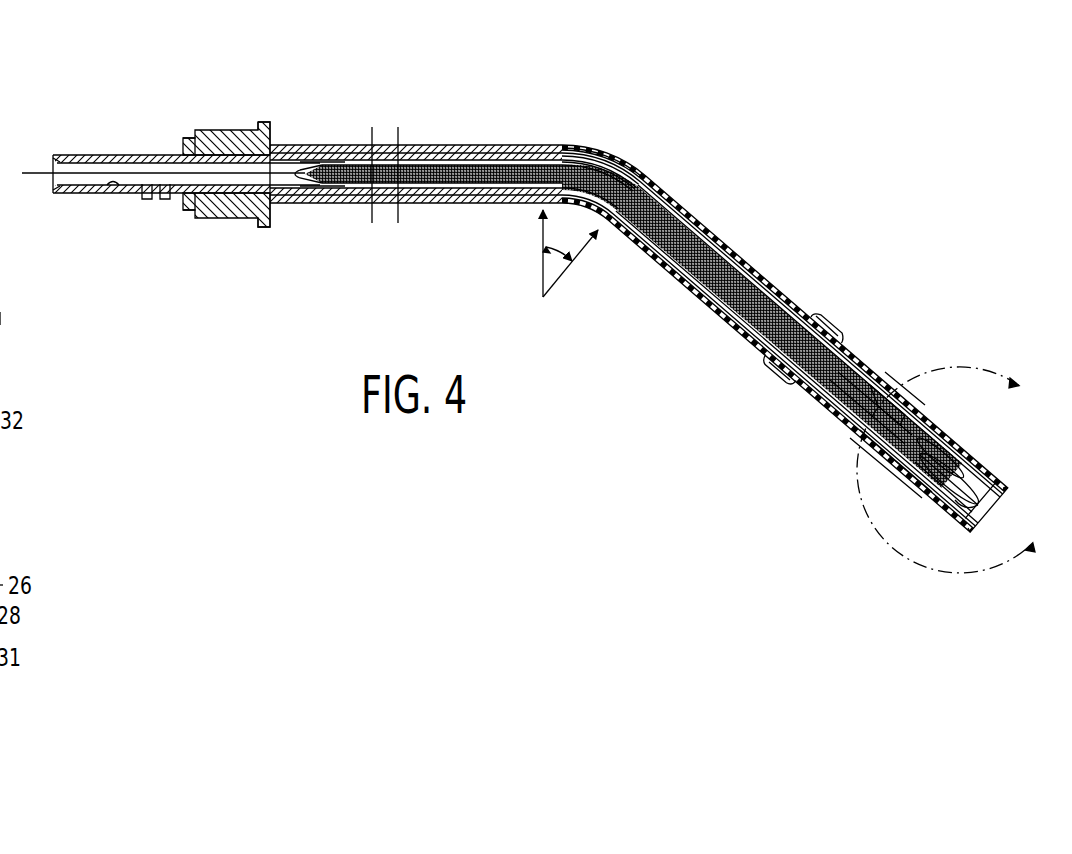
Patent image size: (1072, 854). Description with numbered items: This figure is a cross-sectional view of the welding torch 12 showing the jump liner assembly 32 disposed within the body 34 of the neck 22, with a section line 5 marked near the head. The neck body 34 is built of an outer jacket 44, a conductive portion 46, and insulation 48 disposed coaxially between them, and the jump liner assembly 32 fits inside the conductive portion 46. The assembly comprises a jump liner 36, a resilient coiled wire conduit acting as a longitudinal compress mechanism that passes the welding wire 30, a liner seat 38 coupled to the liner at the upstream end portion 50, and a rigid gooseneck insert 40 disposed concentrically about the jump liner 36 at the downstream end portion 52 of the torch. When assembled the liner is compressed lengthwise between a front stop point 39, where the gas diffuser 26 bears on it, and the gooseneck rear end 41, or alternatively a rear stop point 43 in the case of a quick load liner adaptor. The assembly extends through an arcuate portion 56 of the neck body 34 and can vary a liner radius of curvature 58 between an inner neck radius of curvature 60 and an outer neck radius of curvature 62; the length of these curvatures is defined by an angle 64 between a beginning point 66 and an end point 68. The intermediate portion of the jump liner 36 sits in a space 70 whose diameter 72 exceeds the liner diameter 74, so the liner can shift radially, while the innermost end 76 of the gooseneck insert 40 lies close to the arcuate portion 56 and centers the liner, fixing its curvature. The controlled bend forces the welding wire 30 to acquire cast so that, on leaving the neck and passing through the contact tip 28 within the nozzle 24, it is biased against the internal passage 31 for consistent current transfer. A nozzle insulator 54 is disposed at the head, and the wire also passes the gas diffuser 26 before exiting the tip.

The welding torch 12 is at (727, 101).
The neck 22 is at (712, 170).
The nozzle 24 is at (817, 423).
The gas diffuser 26 is at (881, 380).
The contact tip 28 is at (966, 480).
The welding wire 30 is at (1006, 519).
The internal passage 31 is at (950, 481).
The jump liner assembly 32 is at (298, 165).
The neck body 34 is at (513, 143).
The jump liner 36 is at (338, 166).
The liner seat 38 is at (53, 168).
The front stop point 39 is at (916, 445).
The gooseneck insert 40 is at (791, 289).
The gooseneck rear end 41 is at (56, 190).
The rear stop point 43 is at (265, 128).
The outer jacket 44 is at (212, 133).
The conductive portion 46 is at (145, 152).
The insulation 48 is at (180, 152).
The upstream end portion 50 is at (188, 228).
The downstream end portion 52 is at (822, 456).
The nozzle insulator 54 is at (845, 325).
The arcuate portion 56 is at (598, 158).
The liner radius of curvature 58 is at (568, 152).
The inner neck radius of curvature 60 is at (635, 178).
The outer neck radius of curvature 62 is at (622, 168).
The angle 64 is at (556, 251).
The beginning point 66 is at (542, 242).
The end point 68 is at (570, 258).
The space 70 is at (343, 190).
The diameter 72 is at (399, 208).
The diameter 74 is at (373, 208).
The innermost end 76 is at (654, 185).
The section line 5 is at (946, 464).